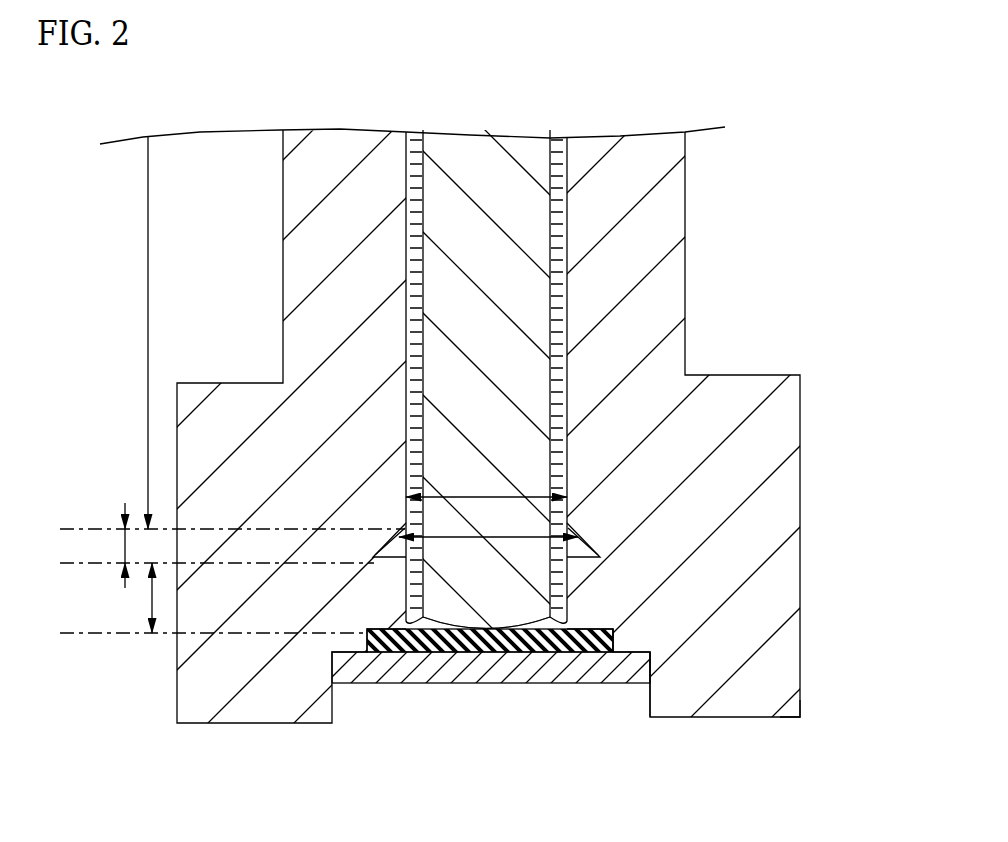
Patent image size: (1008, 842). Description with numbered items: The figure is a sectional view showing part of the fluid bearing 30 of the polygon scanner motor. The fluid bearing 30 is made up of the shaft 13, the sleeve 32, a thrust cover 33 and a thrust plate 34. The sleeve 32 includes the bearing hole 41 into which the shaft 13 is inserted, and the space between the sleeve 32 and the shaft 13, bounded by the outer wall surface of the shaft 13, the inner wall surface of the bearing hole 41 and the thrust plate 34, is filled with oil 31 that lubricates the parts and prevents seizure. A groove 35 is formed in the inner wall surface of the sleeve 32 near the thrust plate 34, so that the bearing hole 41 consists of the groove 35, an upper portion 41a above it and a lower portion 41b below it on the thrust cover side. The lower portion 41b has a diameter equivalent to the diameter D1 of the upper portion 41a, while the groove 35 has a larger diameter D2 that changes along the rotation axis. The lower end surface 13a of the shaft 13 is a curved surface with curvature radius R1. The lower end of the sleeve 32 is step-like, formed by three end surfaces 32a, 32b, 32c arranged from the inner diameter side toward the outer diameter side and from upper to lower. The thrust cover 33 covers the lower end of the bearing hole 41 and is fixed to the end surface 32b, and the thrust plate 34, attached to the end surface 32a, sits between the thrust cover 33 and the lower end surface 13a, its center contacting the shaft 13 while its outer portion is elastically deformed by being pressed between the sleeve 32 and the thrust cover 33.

The fluid bearing 30 is at (716, 134).
The shaft 13 is at (540, 220).
The oil 31 is at (560, 266).
The bearing hole 41 is at (556, 323).
The upper portion 41a is at (148, 293).
The lower portion 41b is at (150, 601).
The groove 35 is at (122, 546).
The diameter of the upper portion D1 is at (520, 493).
The diameter of the groove D2 is at (522, 531).
The lower end surface 13a is at (570, 625).
The sleeve 32 is at (753, 708).
The end surface 32a is at (615, 631).
The end surface 32b is at (622, 653).
The end surface 32c is at (788, 717).
The thrust plate 34 is at (434, 652).
The thrust cover 33 is at (511, 678).
The curvature radius R1 is at (455, 587).